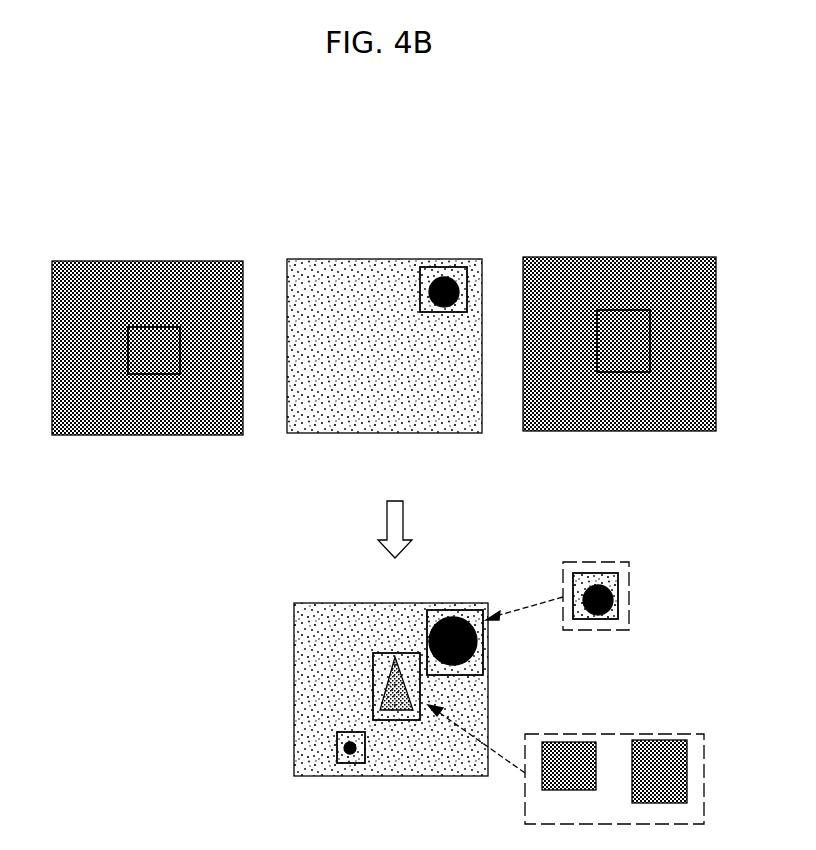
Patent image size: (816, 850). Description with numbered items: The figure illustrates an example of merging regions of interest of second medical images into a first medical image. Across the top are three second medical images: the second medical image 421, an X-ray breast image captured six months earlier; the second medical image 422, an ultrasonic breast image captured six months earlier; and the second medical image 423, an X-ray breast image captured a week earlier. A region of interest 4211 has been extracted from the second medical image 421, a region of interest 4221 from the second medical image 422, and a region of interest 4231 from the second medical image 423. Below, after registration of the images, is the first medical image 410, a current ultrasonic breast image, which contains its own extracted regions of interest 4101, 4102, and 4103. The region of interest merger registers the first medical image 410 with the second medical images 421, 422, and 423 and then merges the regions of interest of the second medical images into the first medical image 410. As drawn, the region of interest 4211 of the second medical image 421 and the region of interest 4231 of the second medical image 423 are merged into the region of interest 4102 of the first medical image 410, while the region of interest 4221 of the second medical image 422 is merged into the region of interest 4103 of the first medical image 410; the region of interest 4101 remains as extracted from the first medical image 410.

The first medical image 410 is at (420, 603).
The second medical image 421 is at (173, 261).
The second medical image 422 is at (412, 259).
The second medical image 423 is at (645, 257).
The region of interest 4211 is at (152, 374).
The region of interest 4221 is at (444, 312).
The region of interest 4231 is at (620, 372).
The region of interest 4101 is at (350, 763).
The region of interest 4102 is at (397, 720).
The region of interest 4103 is at (488, 640).